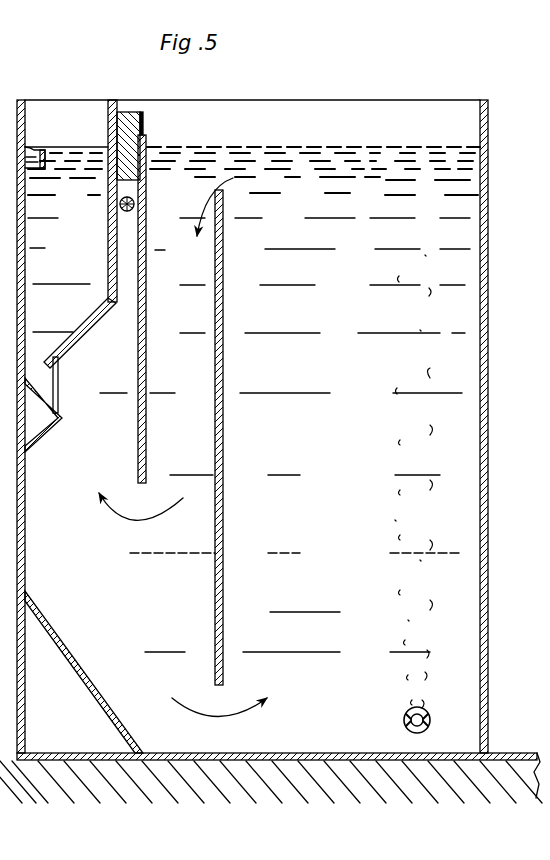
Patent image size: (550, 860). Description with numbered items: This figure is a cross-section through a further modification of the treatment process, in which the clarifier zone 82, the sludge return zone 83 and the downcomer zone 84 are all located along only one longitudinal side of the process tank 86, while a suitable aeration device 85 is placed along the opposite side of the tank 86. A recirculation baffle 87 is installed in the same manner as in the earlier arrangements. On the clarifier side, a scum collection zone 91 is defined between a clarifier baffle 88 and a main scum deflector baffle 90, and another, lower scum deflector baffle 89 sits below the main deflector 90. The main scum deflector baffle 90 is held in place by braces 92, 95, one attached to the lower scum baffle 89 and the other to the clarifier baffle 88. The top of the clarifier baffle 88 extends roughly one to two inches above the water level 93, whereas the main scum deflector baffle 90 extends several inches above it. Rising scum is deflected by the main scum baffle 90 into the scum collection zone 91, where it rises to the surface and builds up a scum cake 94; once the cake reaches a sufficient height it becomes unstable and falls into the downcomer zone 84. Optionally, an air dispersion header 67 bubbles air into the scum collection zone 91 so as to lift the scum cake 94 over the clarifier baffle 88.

The air dispersion header 67 is at (145, 177).
The clarifier zone 82 is at (70, 318).
The sludge return zone 83 is at (178, 596).
The downcomer zone 84 is at (184, 434).
The aeration device 85 is at (394, 722).
The process tank 86 is at (504, 534).
The recirculation baffle 87 is at (233, 490).
The clarifier baffle 88 is at (151, 242).
The lower scum deflector baffle 89 is at (47, 444).
The main scum deflector baffle 90 is at (93, 333).
The scum collection zone 91 is at (126, 221).
The brace 92 is at (62, 388).
The water level 93 is at (89, 147).
The scum cake 94 is at (148, 125).
The brace 95 is at (124, 244).